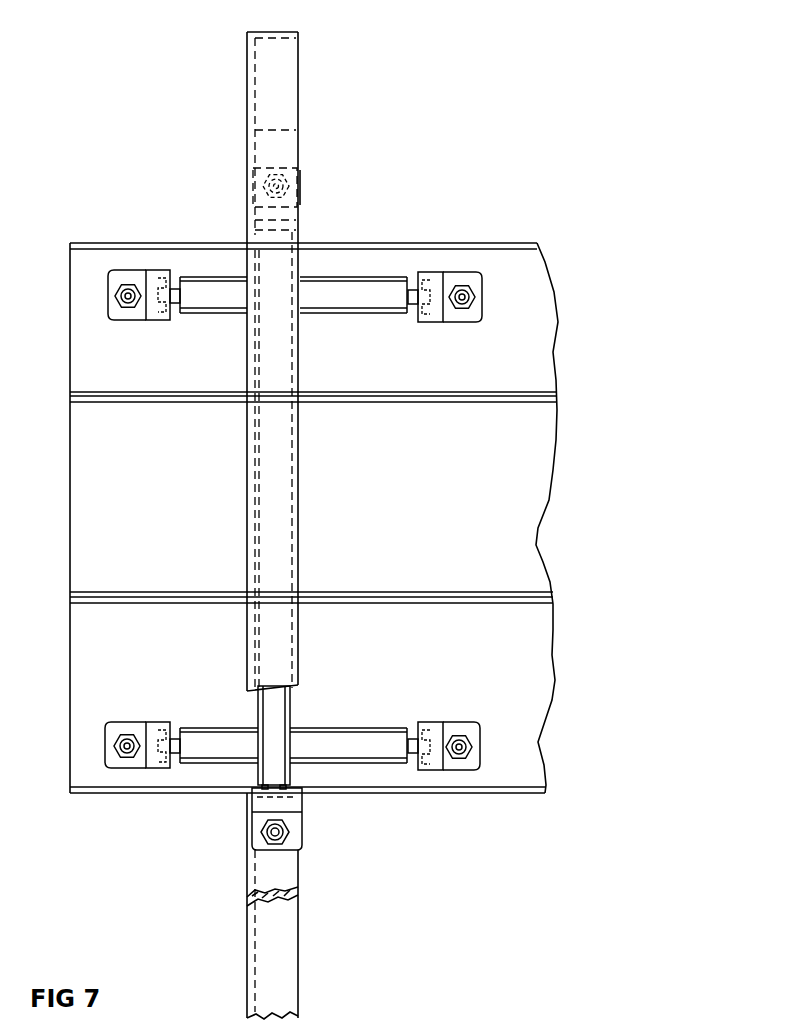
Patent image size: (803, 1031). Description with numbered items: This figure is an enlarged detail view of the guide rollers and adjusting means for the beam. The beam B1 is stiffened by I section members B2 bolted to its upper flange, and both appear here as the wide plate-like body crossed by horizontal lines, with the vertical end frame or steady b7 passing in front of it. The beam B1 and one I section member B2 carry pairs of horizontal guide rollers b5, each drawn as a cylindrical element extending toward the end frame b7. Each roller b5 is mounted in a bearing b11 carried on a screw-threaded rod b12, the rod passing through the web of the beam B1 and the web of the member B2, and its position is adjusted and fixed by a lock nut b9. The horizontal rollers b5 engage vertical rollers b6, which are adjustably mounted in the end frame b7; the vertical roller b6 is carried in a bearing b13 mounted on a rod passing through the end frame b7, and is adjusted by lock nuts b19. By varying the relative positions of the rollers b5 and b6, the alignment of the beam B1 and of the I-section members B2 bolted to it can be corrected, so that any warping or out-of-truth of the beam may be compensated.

The end frame b7 is at (278, 92).
The horizontal guide roller b5 is at (365, 295).
The vertical roller b6 is at (275, 715).
The lock nut b9 is at (128, 288).
The bearing b11 is at (157, 280).
The screw-threaded rod b12 is at (125, 302).
The bearing b13 is at (267, 803).
The lock nut b19 is at (288, 832).
The beam B1 is at (307, 716).
The I section member B2 is at (314, 518).